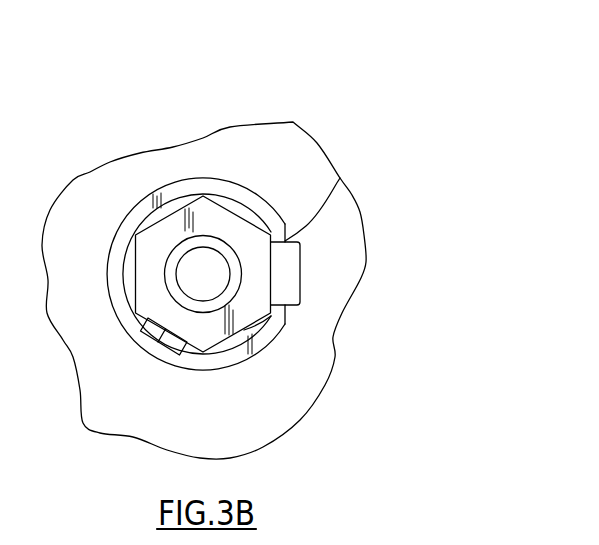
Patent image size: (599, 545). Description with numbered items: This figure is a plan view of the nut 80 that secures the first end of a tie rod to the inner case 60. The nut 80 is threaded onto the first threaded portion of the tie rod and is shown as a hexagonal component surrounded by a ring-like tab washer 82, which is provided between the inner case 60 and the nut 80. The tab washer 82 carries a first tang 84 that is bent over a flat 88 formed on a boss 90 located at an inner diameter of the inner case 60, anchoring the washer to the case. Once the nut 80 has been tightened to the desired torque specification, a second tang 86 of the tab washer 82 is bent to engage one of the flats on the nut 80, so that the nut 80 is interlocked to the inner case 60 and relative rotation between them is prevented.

The inner case 60 is at (355, 222).
The nut 80 is at (220, 337).
The tab washer 82 is at (276, 339).
The first tang 84 is at (290, 273).
The second tang 86 is at (165, 333).
The flat 88 is at (343, 178).
The boss 90 is at (183, 186).